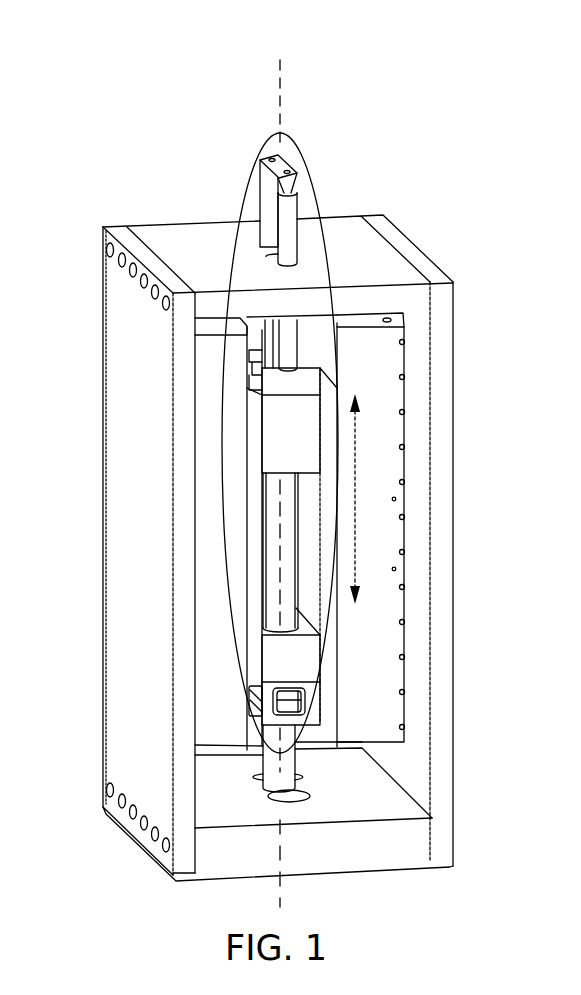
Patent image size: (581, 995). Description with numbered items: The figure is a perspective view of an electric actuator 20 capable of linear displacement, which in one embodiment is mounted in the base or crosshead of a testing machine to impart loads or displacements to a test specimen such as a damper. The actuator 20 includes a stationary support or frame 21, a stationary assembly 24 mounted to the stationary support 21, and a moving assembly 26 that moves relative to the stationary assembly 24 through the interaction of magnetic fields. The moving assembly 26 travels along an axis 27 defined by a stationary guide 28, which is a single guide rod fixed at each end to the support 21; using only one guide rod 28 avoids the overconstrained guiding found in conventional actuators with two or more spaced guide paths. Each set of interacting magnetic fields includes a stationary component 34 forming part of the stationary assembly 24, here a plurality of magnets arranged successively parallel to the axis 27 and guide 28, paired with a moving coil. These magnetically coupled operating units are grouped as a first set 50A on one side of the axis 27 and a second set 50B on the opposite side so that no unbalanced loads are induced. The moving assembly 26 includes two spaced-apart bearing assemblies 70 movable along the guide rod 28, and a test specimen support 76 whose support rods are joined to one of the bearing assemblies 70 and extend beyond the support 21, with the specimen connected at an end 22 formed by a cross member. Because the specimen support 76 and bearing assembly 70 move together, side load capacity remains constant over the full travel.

The electric actuator 20 is at (485, 223).
The stationary support or frame 21 is at (455, 410).
The end 22 is at (290, 170).
The stationary assembly 24 is at (402, 654).
The moving assembly 26 is at (305, 747).
The axis 27 is at (280, 102).
The stationary guide 28 is at (285, 572).
The stationary component 34 is at (387, 615).
The first set of magnetically coupled operating units 50A is at (373, 313).
The second set of magnetically coupled operating units 50B is at (212, 318).
The bearing assemblies 70 is at (313, 405).
The test specimen support 76 is at (310, 202).